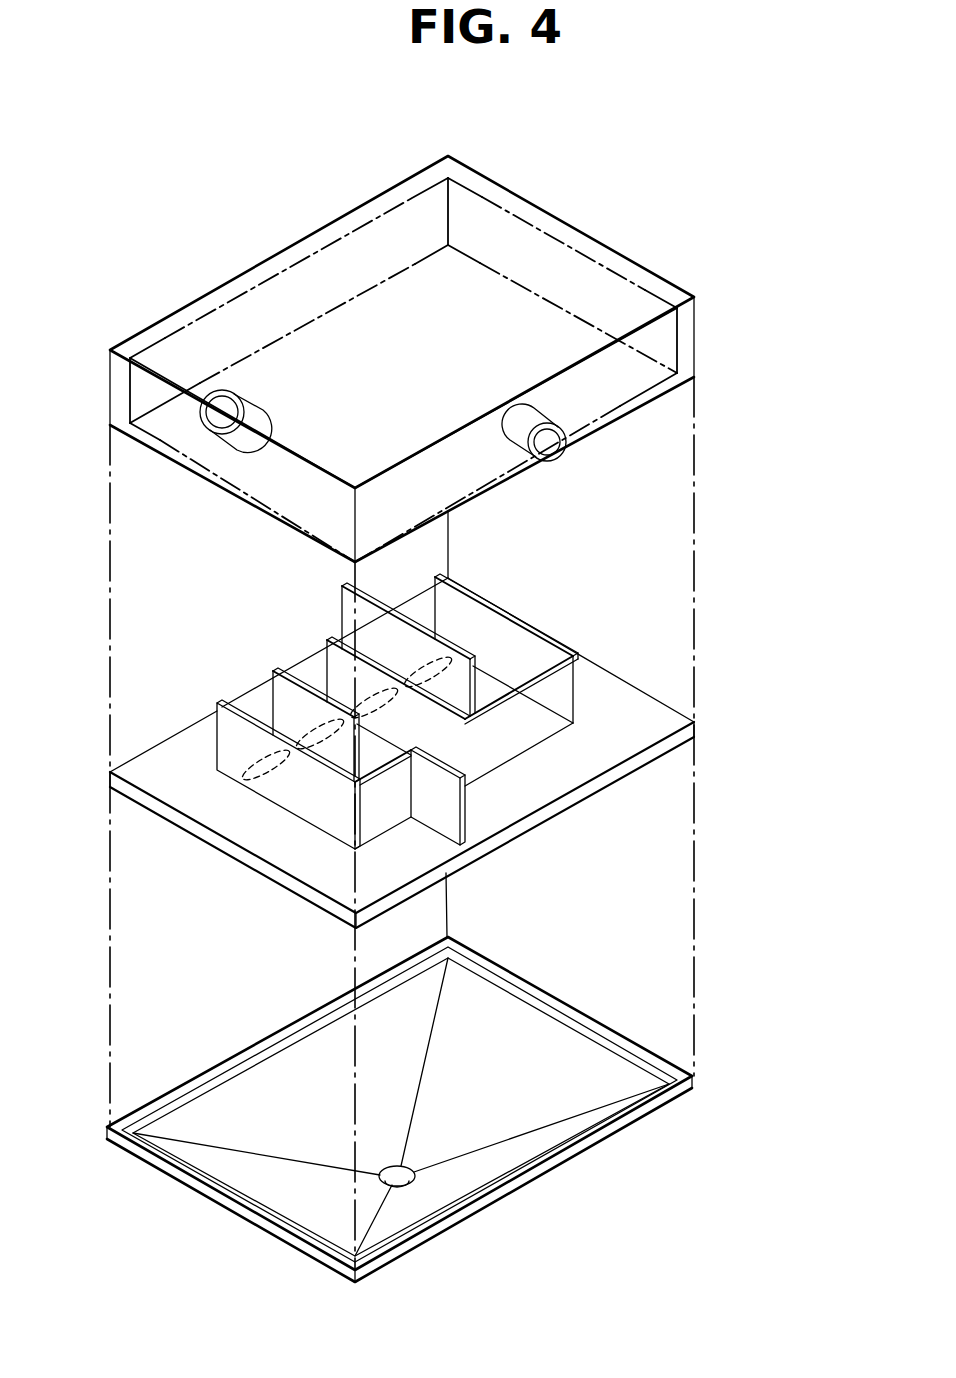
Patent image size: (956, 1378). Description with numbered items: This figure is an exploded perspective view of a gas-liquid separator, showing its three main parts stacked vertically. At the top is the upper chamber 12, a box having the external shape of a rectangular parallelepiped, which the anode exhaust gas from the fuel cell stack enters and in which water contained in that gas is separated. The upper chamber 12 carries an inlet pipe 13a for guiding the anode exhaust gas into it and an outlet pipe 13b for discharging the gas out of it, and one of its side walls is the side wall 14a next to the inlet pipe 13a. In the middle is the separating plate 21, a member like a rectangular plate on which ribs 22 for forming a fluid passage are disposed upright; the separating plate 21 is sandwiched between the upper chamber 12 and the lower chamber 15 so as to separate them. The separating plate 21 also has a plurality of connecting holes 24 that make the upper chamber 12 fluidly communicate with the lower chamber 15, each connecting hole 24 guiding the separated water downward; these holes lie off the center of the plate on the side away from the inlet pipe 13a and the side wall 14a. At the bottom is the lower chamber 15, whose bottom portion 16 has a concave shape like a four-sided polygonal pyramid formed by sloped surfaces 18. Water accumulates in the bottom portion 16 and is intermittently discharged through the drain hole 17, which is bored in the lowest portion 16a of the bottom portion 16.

The upper chamber 12 is at (616, 236).
The inlet pipe 13a is at (566, 440).
The outlet pipe 13b is at (228, 391).
The side wall 14a is at (653, 345).
The separating plate 21 is at (435, 728).
The ribs 22 is at (345, 620).
The connecting holes 24 is at (440, 662).
The lower chamber 15 is at (451, 1138).
The bottom portion 16 is at (464, 1107).
The sloped surfaces 18 is at (575, 1058).
The lowest portion 16a is at (413, 1163).
The drain hole 17 is at (408, 1186).